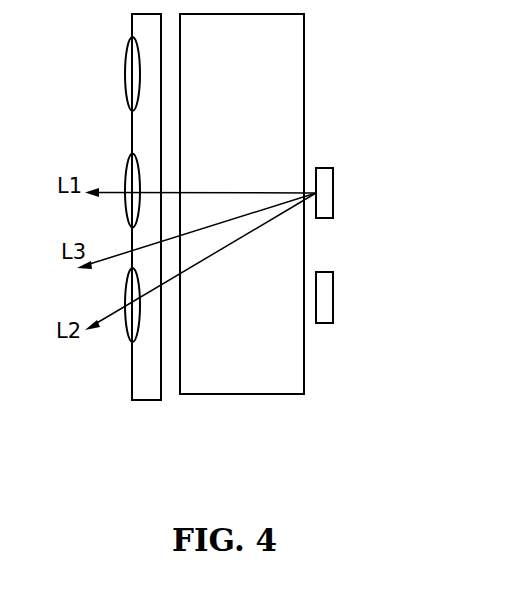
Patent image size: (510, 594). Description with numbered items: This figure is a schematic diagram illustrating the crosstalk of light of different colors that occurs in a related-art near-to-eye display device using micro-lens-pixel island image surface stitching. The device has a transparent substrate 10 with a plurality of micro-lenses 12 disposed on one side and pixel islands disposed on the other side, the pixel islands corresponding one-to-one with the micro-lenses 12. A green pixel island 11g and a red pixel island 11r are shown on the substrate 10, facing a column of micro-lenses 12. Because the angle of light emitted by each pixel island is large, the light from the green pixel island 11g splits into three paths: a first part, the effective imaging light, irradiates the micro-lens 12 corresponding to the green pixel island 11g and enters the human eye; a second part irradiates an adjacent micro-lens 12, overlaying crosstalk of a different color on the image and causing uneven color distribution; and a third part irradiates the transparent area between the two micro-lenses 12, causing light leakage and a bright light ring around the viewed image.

The transparent substrate 10 is at (232, 398).
The micro-lens 12 is at (125, 82).
The green pixel island 11g is at (334, 185).
The red pixel island 11r is at (334, 295).